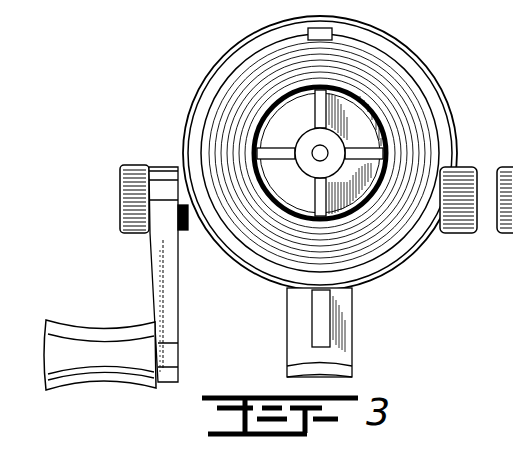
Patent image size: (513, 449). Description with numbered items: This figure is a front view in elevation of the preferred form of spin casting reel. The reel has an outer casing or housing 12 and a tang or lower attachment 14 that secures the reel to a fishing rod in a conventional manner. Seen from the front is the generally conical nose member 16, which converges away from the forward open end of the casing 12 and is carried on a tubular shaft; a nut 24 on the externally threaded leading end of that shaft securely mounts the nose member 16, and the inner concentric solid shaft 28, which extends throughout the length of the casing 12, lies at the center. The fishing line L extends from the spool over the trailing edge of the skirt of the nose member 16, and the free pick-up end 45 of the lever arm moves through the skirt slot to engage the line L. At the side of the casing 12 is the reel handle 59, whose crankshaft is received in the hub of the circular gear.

The outer casing or housing 12 is at (378, 33).
The tang or lower attachment 14 is at (350, 312).
The nose member 16 is at (235, 108).
The nut 24 is at (347, 118).
The inner concentric solid shaft 28 is at (328, 150).
The free pick-up end 45 is at (320, 28).
The reel handle 59 is at (155, 267).
The fishing line L is at (310, 33).